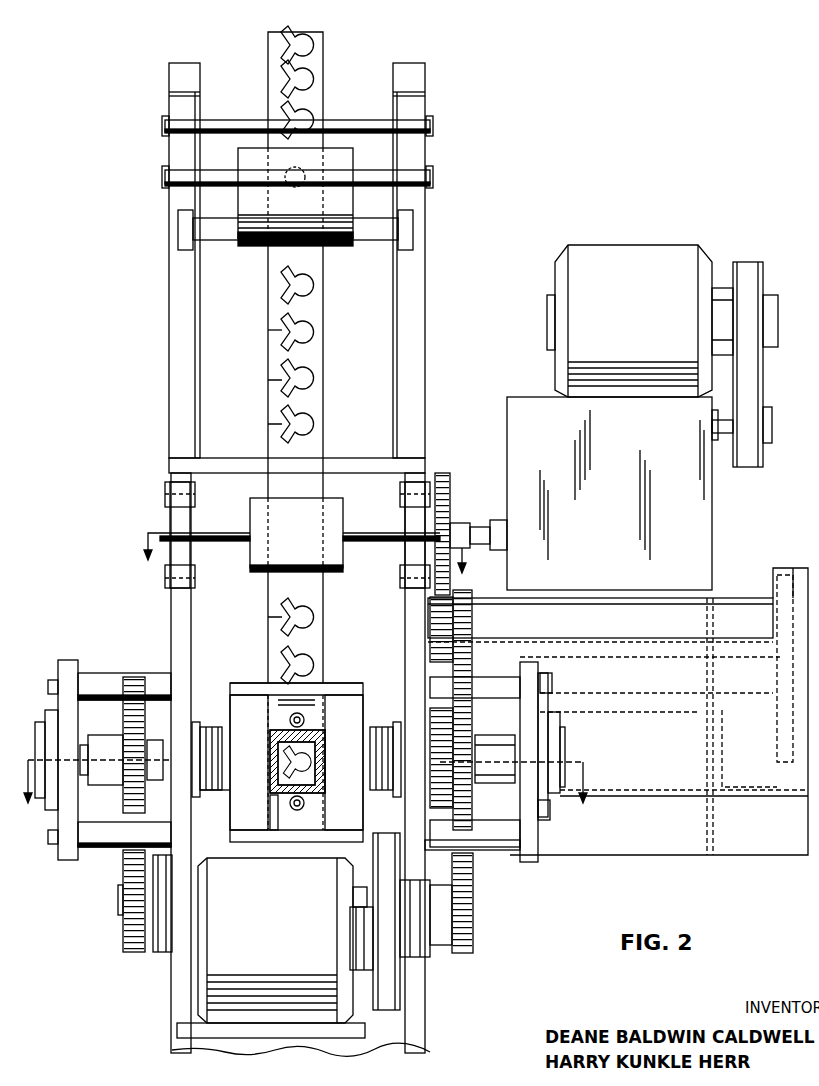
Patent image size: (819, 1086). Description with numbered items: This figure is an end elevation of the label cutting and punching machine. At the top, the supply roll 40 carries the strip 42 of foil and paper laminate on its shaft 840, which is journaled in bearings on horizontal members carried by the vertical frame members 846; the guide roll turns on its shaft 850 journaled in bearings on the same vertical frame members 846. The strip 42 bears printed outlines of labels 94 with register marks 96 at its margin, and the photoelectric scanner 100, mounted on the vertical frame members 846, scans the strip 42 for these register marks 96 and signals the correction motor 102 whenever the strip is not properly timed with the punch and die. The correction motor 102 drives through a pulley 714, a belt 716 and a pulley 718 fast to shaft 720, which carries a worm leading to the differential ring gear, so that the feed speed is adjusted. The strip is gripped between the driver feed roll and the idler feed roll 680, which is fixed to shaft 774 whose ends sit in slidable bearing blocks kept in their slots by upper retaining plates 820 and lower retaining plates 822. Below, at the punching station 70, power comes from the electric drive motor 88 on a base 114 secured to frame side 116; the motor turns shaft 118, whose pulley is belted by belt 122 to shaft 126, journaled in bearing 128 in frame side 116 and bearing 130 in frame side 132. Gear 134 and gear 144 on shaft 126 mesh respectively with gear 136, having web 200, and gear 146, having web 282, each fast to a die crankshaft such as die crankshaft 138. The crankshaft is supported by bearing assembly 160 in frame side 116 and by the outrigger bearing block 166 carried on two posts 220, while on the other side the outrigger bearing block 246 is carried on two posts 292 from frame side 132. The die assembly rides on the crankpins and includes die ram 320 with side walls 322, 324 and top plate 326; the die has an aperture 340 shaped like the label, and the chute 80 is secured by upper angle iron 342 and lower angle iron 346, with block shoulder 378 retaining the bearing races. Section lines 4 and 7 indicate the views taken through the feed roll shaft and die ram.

The supply roll 40 is at (323, 88).
The strip 42 is at (330, 374).
The punching station 70 is at (347, 672).
The chute 80 is at (286, 812).
The electric drive motor 88 is at (281, 921).
The labels 94 is at (313, 286).
The register marks 96 is at (282, 332).
The photoelectric scanner 100 is at (342, 200).
The correction motor 102 is at (637, 256).
The base 114 is at (297, 1040).
The frame side 116 is at (178, 996).
The shaft 118 is at (371, 1010).
The belt 122 is at (400, 990).
The shaft 126 is at (360, 885).
The bearing 128 is at (160, 945).
The bearing 130 is at (436, 930).
The frame side 132 is at (425, 1029).
The gear 134 is at (123, 941).
The gear 136 is at (128, 713).
The die crankshaft 138 is at (151, 745).
The gear 144 is at (473, 905).
The gear 146 is at (448, 745).
The bearing assembly 160 is at (202, 722).
The outrigger bearing block 166 is at (65, 665).
The web 200 is at (112, 742).
The posts 220 is at (98, 672).
The outrigger bearing block 246 is at (545, 822).
The web 282 is at (488, 750).
The posts 292 is at (525, 677).
The die ram 320 is at (226, 832).
The side wall 322 is at (262, 736).
The side wall 324 is at (359, 777).
The top plate 326 is at (250, 683).
The aperture 340 is at (318, 755).
The upper angle iron 342 is at (305, 722).
The lower angle iron 346 is at (305, 804).
The block shoulder 378 is at (305, 698).
The idler feed roll 680 is at (338, 560).
The pulley 714 is at (763, 286).
The belt 716 is at (752, 380).
The pulley 718 is at (772, 445).
The shaft 720 is at (726, 445).
The shaft 774 is at (228, 537).
The upper retaining plates 820 is at (165, 490).
The lower retaining plates 822 is at (165, 590).
The shaft 840 is at (371, 120).
The vertical frame members 846 is at (169, 373).
The shaft 850 is at (212, 176).
The section line 4 is at (304, 563).
The section line 7 is at (305, 793).